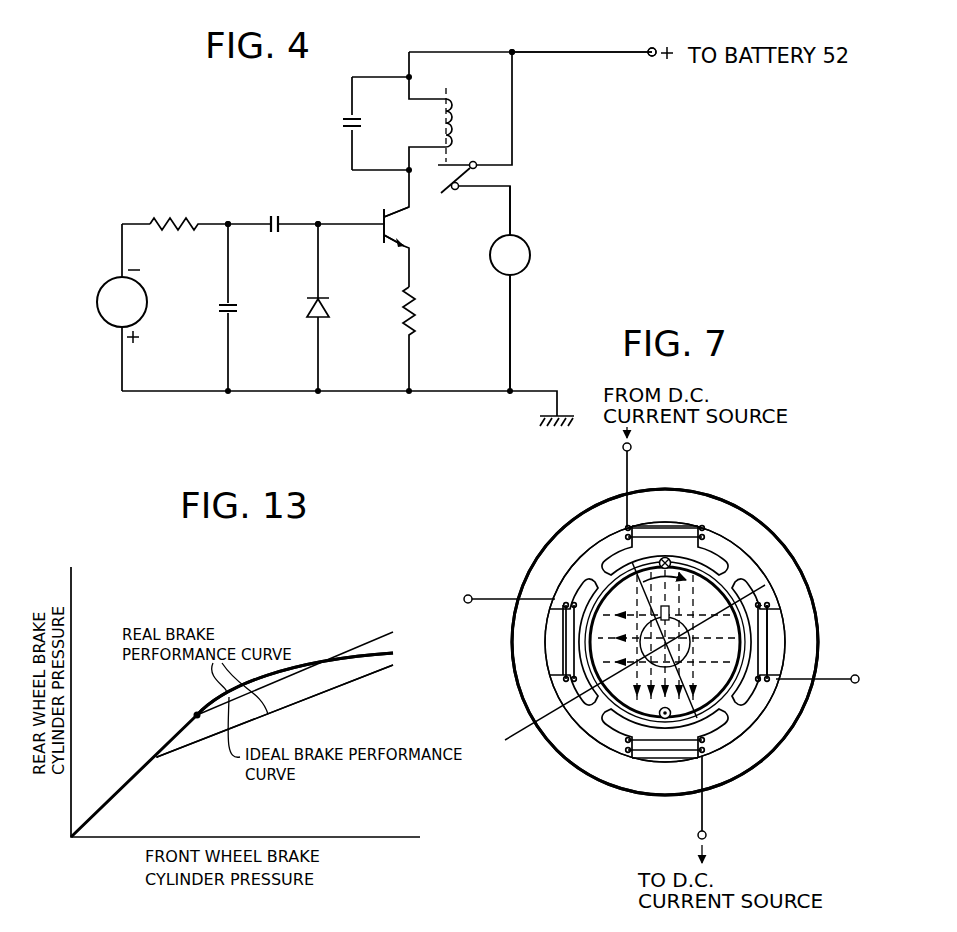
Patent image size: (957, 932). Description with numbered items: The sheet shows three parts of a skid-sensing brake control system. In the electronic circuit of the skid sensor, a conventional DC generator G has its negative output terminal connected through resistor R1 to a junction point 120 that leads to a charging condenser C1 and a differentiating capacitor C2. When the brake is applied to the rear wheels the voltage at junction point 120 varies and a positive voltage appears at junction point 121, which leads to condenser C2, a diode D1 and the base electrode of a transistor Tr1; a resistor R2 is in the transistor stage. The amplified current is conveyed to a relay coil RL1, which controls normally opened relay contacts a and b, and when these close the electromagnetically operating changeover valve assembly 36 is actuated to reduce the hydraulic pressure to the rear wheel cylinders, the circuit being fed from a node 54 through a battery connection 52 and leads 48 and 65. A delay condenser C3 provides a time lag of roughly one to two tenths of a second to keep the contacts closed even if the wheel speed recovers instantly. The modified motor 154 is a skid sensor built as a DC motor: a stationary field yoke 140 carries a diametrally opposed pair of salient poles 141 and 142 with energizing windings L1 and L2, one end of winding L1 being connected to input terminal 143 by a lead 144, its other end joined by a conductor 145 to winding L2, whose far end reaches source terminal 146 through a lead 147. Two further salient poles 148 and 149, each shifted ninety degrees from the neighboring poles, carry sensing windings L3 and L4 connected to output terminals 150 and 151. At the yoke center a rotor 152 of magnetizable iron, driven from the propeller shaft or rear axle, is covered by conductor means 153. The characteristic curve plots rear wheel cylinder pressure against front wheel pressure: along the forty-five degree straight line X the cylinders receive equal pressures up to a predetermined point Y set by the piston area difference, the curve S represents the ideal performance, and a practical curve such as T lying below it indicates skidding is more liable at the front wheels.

In FIG. 4, the DC generator G is at (122, 306).
In FIG. 4, the resistor R1 is at (170, 222).
In FIG. 4, the resistor R2 is at (412, 315).
In FIG. 4, the charging condenser C1 is at (237, 305).
In FIG. 4, the differentiating capacitor C2 is at (270, 231).
In FIG. 4, the delay condenser C3 is at (342, 133).
In FIG. 4, the diode D1 is at (329, 308).
In FIG. 4, the transistor Tr1 is at (400, 229).
In FIG. 4, the relay coil RL1 is at (476, 124).
In FIG. 4, the relay contact a is at (463, 162).
In FIG. 4, the relay contact b is at (458, 192).
In FIG. 4, the battery terminal node 54 is at (512, 50).
In FIG. 4, the battery 52 is at (584, 52).
In FIG. 4, the lead wire 48 is at (514, 201).
In FIG. 4, the air changeover valve 36 is at (530, 258).
In FIG. 4, the lead wire 65 is at (512, 333).
In FIG. 4, the junction point 120 is at (228, 221).
In FIG. 4, the junction point 121 is at (318, 221).
In FIG. 7, the stationary field yoke 140 is at (787, 572).
In FIG. 7, the salient pole 141 is at (703, 527).
In FIG. 7, the salient pole 142 is at (690, 745).
In FIG. 7, the input terminal 143 is at (623, 448).
In FIG. 7, the lead 144 is at (626, 483).
In FIG. 7, the conductor 145 is at (626, 594).
In FIG. 7, the source terminal 146 is at (698, 836).
In FIG. 7, the lead 147 is at (703, 812).
In FIG. 7, the salient pole 148 is at (566, 660).
In FIG. 7, the salient pole 149 is at (769, 622).
In FIG. 7, the output terminal 150 is at (468, 594).
In FIG. 7, the output terminal 151 is at (854, 684).
In FIG. 7, the rotor 152 is at (560, 712).
In FIG. 7, the conductor means 153 is at (772, 604).
In FIG. 7, the modified motor 154 is at (550, 530).
In FIG. 7, the winding L1 is at (672, 527).
In FIG. 7, the winding L2 is at (650, 757).
In FIG. 7, the winding L3 is at (563, 632).
In FIG. 7, the winding L4 is at (769, 655).
In FIG. 13, the inclined straight line X is at (157, 756).
In FIG. 13, the predetermined point Y is at (193, 714).
In FIG. 13, the ideal performance curve S is at (293, 668).
In FIG. 13, the practical curve T is at (201, 742).